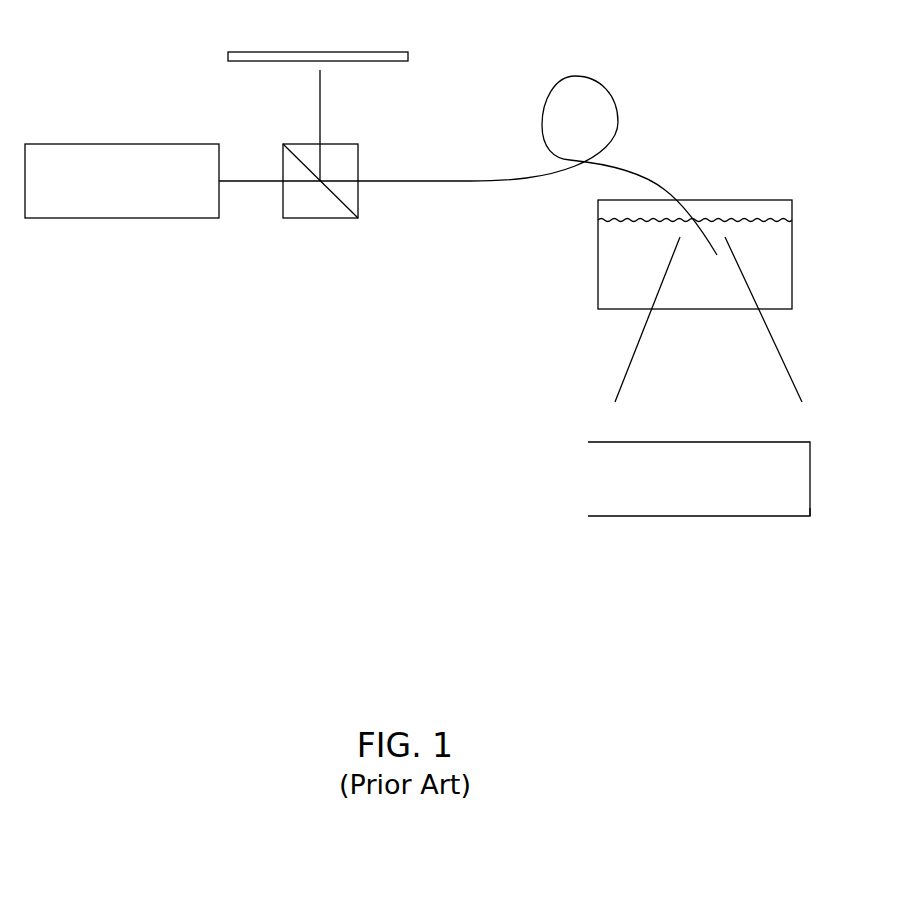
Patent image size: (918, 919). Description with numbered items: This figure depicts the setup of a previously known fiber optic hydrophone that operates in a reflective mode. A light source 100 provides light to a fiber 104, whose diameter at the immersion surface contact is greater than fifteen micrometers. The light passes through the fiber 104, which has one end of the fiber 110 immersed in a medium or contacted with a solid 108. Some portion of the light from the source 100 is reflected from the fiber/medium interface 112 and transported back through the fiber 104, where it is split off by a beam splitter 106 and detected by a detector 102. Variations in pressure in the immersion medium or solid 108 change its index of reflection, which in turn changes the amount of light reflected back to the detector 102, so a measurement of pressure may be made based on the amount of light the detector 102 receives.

The light source 100 is at (122, 181).
The detector 102 is at (318, 101).
The fiber 104 is at (468, 165).
The beam splitter 106 is at (316, 196).
The immersion medium or solid 108 is at (776, 263).
The end of the fiber 110 is at (699, 479).
The fiber/medium interface 112 is at (803, 525).